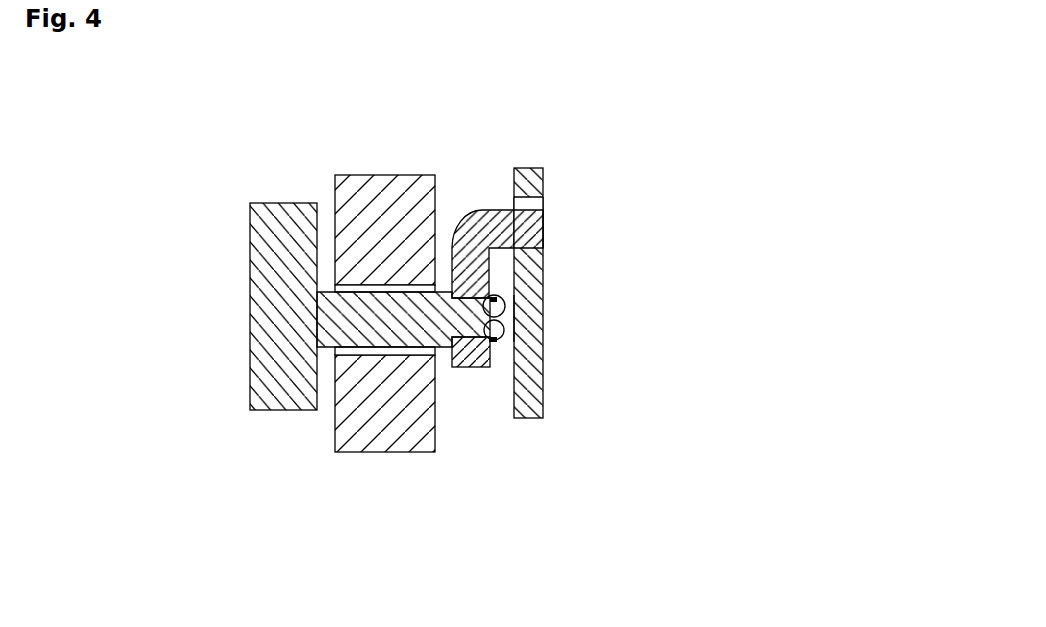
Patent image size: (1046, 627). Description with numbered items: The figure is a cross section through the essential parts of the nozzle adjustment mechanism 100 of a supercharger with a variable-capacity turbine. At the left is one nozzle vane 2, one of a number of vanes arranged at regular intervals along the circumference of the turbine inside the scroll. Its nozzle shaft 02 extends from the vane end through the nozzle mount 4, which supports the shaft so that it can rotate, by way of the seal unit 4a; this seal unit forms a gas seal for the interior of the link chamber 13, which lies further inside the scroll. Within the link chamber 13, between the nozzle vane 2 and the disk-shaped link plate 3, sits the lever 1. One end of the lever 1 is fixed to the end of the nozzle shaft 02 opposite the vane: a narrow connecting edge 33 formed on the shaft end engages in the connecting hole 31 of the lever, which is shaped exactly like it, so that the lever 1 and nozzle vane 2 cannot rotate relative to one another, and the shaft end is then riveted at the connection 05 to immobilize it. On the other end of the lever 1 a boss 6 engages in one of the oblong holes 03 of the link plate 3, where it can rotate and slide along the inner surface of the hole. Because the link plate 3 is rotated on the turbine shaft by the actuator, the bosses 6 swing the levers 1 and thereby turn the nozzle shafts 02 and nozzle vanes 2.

The lever 1 is at (461, 378).
The nozzle vane 2 is at (270, 410).
The link plate 3 is at (537, 321).
The nozzle mount 4 is at (388, 442).
The seal unit 4a is at (368, 288).
The boss 6 is at (473, 224).
The nozzle shaft 02 is at (372, 328).
The oblong hole 03 is at (543, 203).
The connection 05 is at (505, 304).
The link chamber 13 is at (534, 128).
The connecting hole 31 is at (538, 358).
The connecting edge 33 is at (491, 296).
The nozzle adjustment mechanism 100 is at (561, 329).